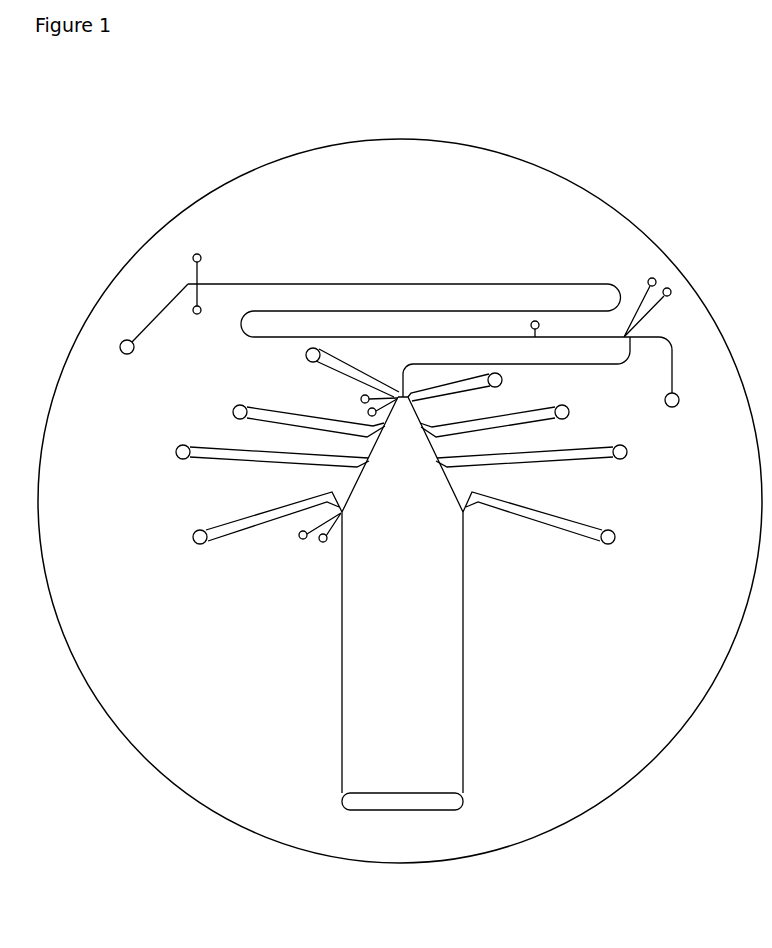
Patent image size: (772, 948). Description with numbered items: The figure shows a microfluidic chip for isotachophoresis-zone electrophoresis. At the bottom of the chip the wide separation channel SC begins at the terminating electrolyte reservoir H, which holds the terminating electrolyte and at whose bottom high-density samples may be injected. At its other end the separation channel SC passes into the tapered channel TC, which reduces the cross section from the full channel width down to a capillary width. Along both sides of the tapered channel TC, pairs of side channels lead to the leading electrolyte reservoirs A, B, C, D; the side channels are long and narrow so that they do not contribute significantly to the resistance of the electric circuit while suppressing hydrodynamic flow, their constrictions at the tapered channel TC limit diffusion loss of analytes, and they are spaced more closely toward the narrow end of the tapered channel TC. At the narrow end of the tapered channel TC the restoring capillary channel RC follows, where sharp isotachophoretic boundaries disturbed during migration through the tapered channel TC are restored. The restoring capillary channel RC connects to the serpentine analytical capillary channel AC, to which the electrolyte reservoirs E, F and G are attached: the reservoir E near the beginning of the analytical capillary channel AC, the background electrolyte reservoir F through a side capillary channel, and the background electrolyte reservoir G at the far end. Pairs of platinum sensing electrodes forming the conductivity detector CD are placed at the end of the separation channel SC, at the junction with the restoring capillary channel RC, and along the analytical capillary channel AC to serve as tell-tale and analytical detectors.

The leading electrolyte reservoir A is at (402, 519).
The leading electrolyte reservoir B is at (400, 456).
The leading electrolyte reservoir C is at (401, 421).
The leading electrolyte reservoir D is at (405, 374).
The background electrolyte reservoir E is at (526, 327).
The background electrolyte reservoir F is at (681, 401).
The background electrolyte reservoir G is at (141, 320).
The terminating electrolyte reservoir H is at (402, 802).
The analytical capillary channel AC is at (430, 331).
The restoring capillary channel RC is at (516, 367).
The tapered channel TC is at (402, 454).
The separation channel SC is at (402, 652).
The conductivity detector CD is at (432, 406).